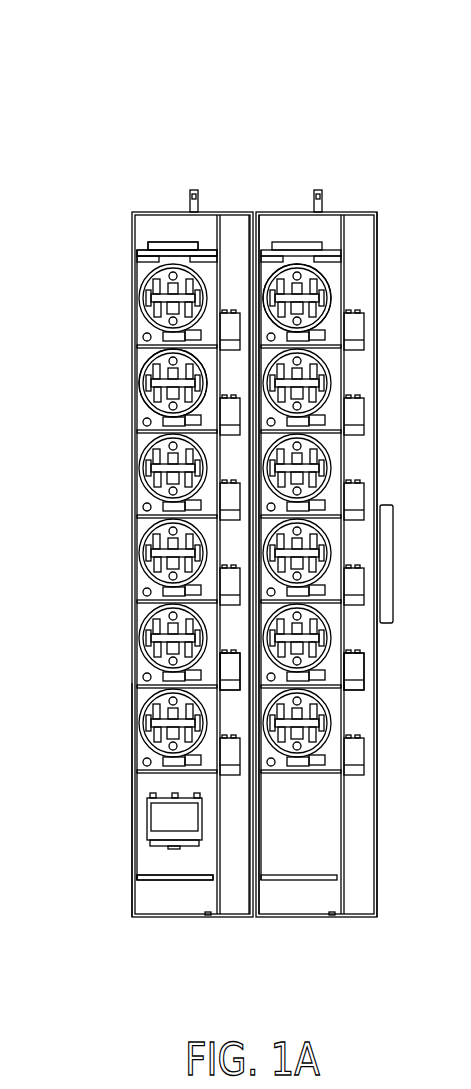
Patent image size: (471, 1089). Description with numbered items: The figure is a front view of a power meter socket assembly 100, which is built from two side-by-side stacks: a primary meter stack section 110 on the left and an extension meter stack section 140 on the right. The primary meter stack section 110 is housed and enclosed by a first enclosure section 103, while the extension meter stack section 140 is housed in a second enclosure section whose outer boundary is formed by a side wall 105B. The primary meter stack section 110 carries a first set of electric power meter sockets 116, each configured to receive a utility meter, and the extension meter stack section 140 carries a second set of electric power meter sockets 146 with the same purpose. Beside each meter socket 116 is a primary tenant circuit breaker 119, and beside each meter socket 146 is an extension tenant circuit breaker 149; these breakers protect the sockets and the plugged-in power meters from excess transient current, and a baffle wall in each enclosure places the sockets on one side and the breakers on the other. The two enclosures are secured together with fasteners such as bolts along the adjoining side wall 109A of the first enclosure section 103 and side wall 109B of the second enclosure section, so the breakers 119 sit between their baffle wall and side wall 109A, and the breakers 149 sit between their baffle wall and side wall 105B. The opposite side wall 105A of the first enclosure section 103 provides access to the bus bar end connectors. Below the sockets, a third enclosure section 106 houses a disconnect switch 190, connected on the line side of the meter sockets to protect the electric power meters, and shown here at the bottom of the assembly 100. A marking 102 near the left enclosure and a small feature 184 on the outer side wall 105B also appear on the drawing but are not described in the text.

The power meter socket assembly 100 is at (110, 98).
The housing 102 is at (120, 278).
The first enclosure section 103 is at (141, 238).
The side wall 105A is at (140, 725).
The side wall 105B is at (378, 474).
The third enclosure section 106 is at (174, 862).
The side wall 109A is at (250, 862).
The side wall 109B is at (258, 862).
The primary meter stack section 110 is at (252, 180).
The electric power meter socket 116 is at (195, 388).
The primary tenant circuit breaker 119 is at (228, 663).
The extension meter stack section 140 is at (380, 180).
The electric power meter socket 146 is at (310, 297).
The extension tenant circuit breaker 149 is at (365, 680).
The latch 184 is at (388, 533).
The disconnect switch 190 is at (152, 820).